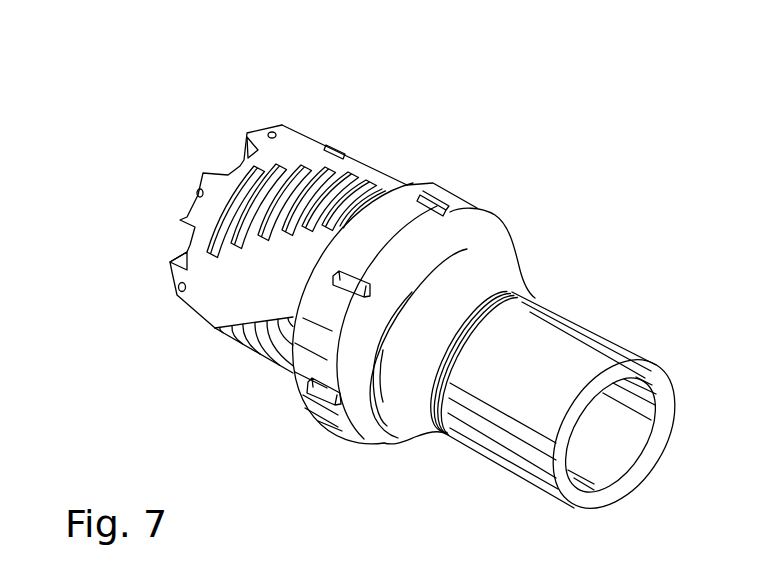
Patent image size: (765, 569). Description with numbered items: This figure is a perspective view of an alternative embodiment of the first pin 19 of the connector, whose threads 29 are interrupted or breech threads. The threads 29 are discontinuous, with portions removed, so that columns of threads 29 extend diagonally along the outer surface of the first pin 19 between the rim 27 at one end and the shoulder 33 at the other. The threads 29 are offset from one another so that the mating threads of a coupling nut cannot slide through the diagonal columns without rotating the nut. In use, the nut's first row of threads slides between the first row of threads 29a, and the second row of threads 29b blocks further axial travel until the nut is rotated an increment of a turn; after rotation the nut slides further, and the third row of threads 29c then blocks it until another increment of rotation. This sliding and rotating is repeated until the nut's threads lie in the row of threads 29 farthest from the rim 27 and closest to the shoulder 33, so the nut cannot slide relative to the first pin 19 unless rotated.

The first pin 19 is at (500, 249).
The rim 27 is at (187, 240).
The threads 29 is at (249, 189).
The first row of threads 29a is at (250, 164).
The second row of threads 29b is at (272, 162).
The third row of threads 29c is at (297, 163).
The shoulder 33 is at (413, 183).